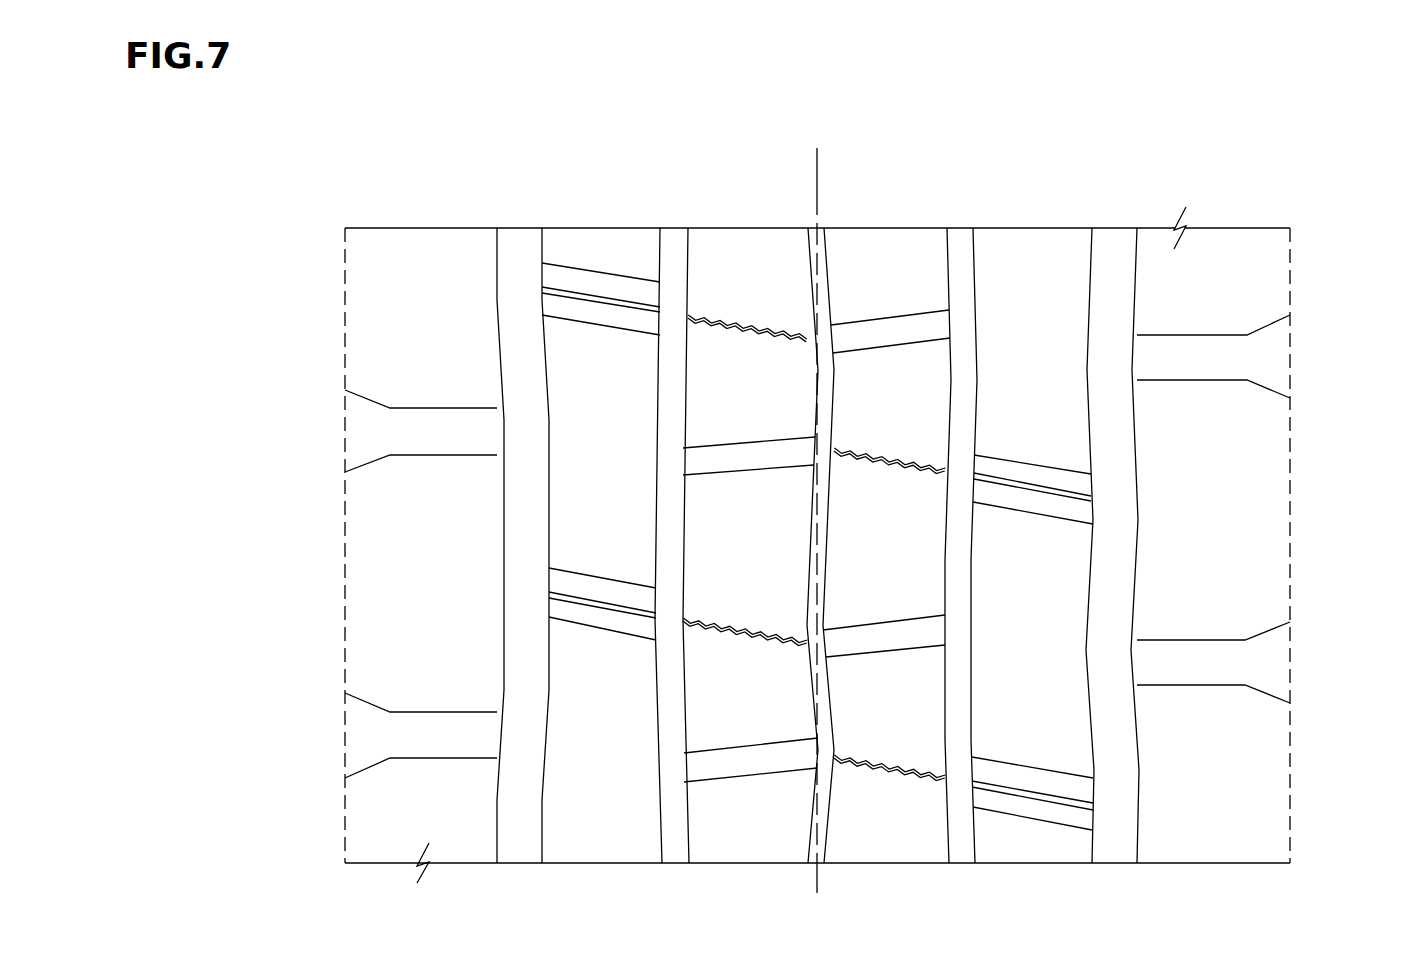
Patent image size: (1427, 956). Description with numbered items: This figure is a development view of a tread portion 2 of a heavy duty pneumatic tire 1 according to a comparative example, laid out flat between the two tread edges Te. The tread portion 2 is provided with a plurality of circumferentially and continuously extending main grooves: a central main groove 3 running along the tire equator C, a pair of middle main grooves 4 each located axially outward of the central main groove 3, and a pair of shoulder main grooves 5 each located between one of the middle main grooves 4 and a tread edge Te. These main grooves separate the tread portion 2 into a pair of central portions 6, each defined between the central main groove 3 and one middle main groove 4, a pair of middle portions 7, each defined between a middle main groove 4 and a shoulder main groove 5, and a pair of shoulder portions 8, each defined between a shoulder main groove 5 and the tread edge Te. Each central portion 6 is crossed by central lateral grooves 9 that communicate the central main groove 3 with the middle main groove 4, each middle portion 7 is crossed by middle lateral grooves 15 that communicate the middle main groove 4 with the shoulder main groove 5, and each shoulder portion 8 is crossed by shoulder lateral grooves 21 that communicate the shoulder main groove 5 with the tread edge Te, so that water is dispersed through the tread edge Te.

The heavy duty pneumatic tire 1 is at (875, 480).
The tread portion 2 is at (1308, 180).
The central main groove 3 is at (820, 246).
The middle main groove 4 is at (670, 250).
The shoulder main groove 5 is at (520, 250).
The central portion 6 is at (1024, 535).
The middle portion 7 is at (820, 499).
The shoulder portion 8 is at (807, 473).
The central lateral groove 9 is at (912, 325).
The middle lateral groove 15 is at (563, 307).
The shoulder lateral groove 21 is at (375, 735).
The tread edge Te is at (345, 295).
The tire equator C is at (818, 506).